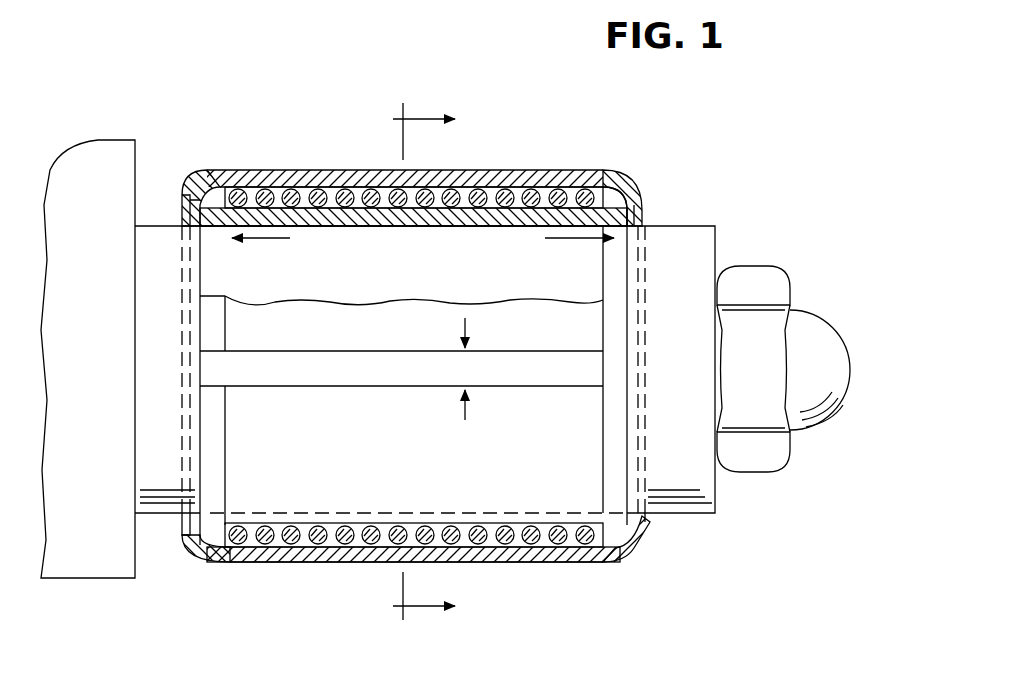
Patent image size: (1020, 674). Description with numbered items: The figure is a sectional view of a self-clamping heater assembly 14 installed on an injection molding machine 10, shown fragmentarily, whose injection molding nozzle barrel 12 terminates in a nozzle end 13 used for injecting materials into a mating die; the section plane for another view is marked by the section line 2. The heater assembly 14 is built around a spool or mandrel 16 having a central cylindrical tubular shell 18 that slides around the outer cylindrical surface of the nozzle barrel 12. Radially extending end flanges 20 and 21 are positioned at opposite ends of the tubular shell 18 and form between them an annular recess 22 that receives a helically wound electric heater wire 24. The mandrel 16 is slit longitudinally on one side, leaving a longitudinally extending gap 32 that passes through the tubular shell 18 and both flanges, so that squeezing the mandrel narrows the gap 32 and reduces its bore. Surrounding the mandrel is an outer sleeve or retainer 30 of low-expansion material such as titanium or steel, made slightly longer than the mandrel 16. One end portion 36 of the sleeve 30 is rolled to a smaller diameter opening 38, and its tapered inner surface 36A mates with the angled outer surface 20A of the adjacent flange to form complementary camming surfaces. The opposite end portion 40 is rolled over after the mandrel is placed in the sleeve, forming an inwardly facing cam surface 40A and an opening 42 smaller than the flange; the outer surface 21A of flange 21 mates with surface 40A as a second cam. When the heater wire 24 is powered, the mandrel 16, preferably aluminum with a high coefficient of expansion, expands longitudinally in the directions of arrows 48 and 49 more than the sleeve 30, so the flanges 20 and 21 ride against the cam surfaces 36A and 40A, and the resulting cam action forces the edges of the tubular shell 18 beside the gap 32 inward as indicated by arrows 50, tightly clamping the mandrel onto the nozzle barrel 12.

The injection molding machine 10 is at (100, 160).
The injection molding nozzle barrel 12 is at (705, 252).
The nozzle end 13 is at (804, 325).
The heater assembly 14 is at (450, 362).
The spool or mandrel 16 is at (432, 227).
The central cylindrical tubular shell 18 is at (608, 176).
The end flange 20 is at (643, 212).
The outer surface of annular flange 20A is at (640, 192).
The end flange 21 is at (215, 198).
The outer surface of flange 21A is at (206, 557).
The annular recess 22 is at (298, 170).
The helically wound electric heater wire 24 is at (378, 548).
The outer sleeve or retainer 30 is at (496, 170).
The longitudinally extending gap 32 is at (323, 372).
The end portion of sleeve 36 is at (641, 553).
The inner surface of end portion 36A is at (645, 522).
The smaller diameter opening 38 is at (645, 217).
The end portion of sleeve 40 is at (208, 172).
The inner surface of end portion 40A is at (195, 206).
The opening 42 is at (183, 525).
The arrow 48 is at (576, 259).
The arrow 49 is at (262, 242).
The arrows 50 is at (465, 326).
The section line 2 is at (435, 363).